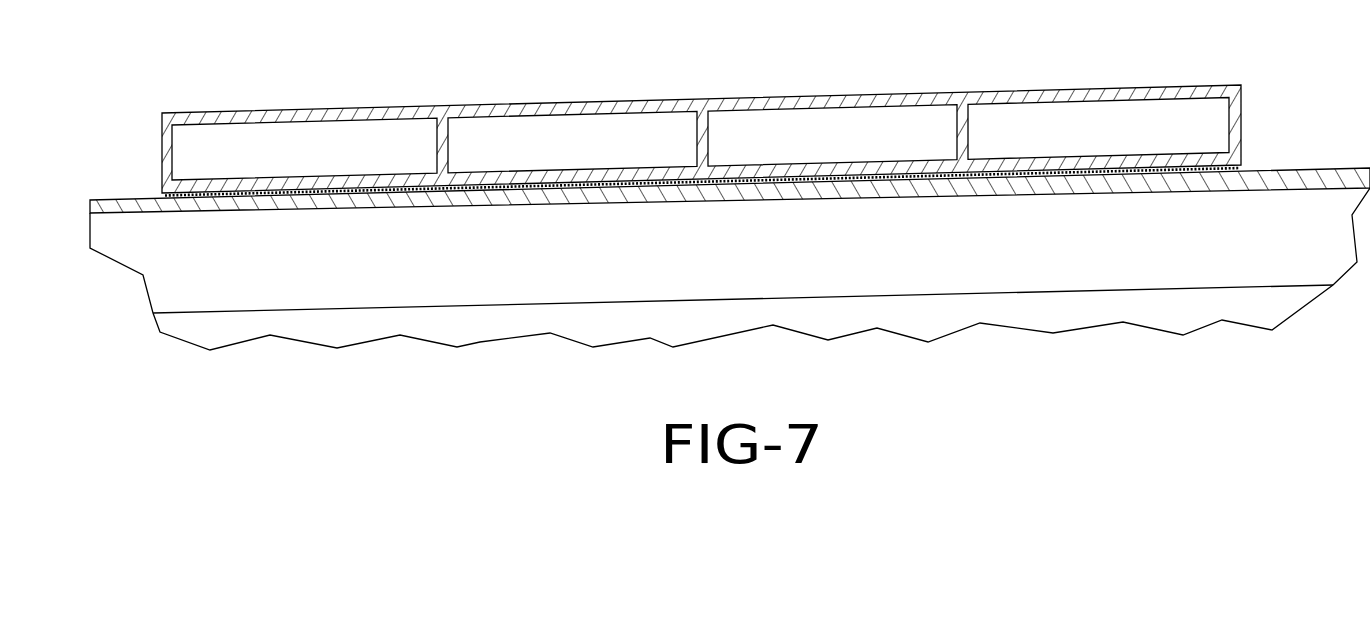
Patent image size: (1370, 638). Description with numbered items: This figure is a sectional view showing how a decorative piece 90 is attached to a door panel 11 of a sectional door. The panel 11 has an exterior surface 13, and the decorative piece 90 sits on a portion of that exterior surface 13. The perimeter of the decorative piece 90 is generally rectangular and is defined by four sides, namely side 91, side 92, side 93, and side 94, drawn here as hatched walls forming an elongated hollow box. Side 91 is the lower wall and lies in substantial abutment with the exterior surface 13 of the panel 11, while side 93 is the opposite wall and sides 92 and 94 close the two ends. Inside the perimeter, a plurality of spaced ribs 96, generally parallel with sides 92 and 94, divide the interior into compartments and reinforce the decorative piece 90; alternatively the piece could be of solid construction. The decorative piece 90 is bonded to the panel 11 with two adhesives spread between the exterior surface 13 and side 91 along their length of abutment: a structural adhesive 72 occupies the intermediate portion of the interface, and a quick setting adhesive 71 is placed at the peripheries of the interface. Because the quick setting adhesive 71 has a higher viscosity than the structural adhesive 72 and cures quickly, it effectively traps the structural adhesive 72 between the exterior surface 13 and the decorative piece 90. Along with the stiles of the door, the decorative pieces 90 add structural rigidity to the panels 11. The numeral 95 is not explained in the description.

The panel 11 is at (1010, 236).
The exterior surface 13 is at (311, 203).
The quick setting adhesive 71 is at (199, 198).
The structural adhesive 72 is at (633, 188).
The decorative piece 90 is at (290, 108).
The side 91 is at (400, 184).
The side 92 is at (1237, 126).
The side 93 is at (650, 108).
The side 94 is at (165, 155).
The layer 95 is at (842, 190).
The ribs 96 is at (442, 150).